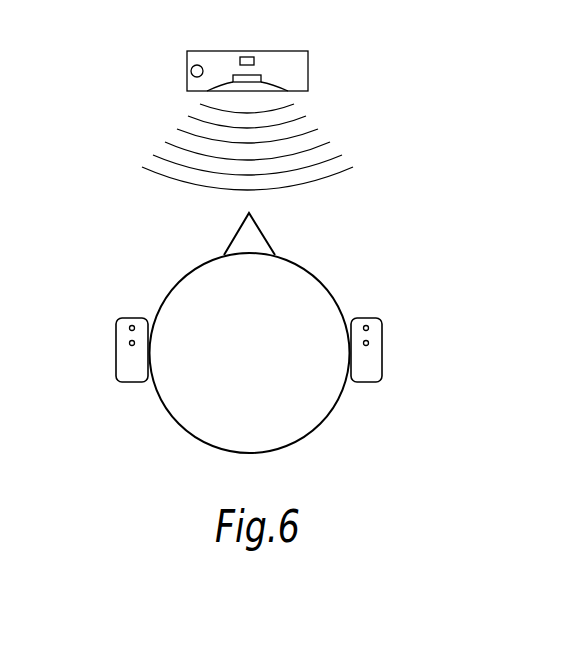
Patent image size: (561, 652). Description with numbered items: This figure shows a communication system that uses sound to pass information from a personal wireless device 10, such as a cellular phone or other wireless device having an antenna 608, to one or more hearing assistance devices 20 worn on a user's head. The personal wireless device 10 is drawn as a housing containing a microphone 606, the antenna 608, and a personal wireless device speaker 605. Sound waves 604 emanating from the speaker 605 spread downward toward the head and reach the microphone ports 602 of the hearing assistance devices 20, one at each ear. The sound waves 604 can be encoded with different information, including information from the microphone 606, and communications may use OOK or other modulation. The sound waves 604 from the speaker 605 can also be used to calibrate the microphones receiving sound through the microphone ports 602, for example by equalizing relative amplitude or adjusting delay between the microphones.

The personal wireless device 10 is at (203, 52).
The hearing assistance device 20 is at (122, 378).
The microphone port 602 is at (129, 328).
The sound waves 604 is at (327, 177).
The personal wireless device speaker 605 is at (270, 83).
The microphone 606 is at (247, 57).
The antenna 608 is at (191, 71).